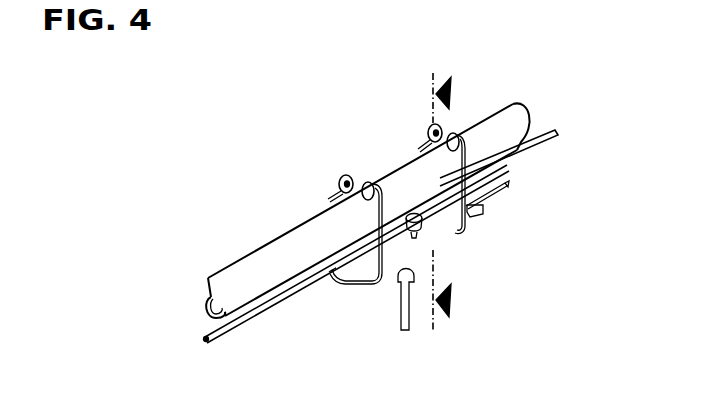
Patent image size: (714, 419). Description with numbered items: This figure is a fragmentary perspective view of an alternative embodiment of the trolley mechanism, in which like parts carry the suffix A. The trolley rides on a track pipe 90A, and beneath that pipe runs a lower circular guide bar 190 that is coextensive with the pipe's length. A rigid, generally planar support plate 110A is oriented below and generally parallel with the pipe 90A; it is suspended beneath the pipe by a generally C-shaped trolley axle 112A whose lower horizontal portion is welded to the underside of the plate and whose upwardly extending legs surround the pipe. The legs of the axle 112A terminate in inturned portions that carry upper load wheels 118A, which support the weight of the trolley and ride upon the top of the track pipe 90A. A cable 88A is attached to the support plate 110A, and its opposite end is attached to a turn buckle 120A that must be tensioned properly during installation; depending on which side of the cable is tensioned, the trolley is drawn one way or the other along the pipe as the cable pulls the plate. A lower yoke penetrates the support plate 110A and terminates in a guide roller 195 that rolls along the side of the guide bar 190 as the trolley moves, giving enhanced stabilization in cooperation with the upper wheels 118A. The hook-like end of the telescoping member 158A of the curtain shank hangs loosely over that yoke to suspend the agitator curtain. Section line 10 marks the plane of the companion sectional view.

The pipe 90A is at (245, 268).
The lower circular guide bar 190 is at (233, 323).
The trolley axle 112A is at (470, 146).
The cable 88A is at (505, 191).
The support plate 110A is at (486, 202).
The load wheel 118A is at (344, 177).
The turn buckle 120A is at (333, 284).
The guide roller 195 is at (410, 212).
The telescoping member 158A is at (406, 320).
The section line 10- 10 is at (447, 91).